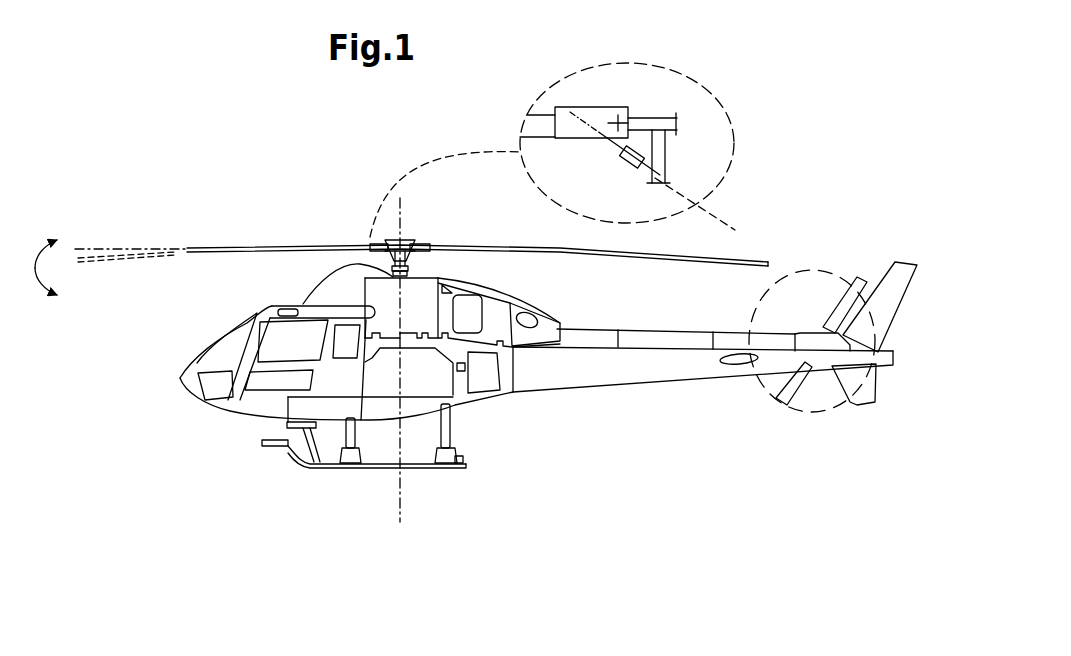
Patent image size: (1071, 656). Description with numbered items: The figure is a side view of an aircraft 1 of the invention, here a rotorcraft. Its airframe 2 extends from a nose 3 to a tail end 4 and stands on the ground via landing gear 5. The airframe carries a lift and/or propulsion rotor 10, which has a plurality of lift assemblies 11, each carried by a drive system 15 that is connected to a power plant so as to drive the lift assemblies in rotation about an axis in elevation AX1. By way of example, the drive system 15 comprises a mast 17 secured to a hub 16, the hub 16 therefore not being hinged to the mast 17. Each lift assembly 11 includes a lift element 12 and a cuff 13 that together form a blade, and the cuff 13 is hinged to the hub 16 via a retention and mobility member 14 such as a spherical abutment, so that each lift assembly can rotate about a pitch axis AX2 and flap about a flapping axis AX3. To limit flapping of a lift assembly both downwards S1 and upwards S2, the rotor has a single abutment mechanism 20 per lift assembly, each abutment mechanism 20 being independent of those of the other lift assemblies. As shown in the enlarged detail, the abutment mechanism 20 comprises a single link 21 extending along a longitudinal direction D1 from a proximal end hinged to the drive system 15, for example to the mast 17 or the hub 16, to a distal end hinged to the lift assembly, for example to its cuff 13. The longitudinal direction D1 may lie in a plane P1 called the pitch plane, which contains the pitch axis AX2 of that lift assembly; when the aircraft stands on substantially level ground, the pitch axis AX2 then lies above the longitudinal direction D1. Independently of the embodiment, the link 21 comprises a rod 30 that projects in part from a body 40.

The aircraft 1 is at (497, 247).
The airframe 2 is at (247, 417).
The nose 3 is at (178, 378).
The tail end 4 is at (900, 395).
The landing gear 5 is at (478, 433).
The rotor 10 is at (433, 177).
The lift assembly 11 is at (93, 266).
The lift element 12 is at (188, 248).
The cuff 13 is at (373, 246).
The retention and mobility member 14 is at (387, 238).
The drive system 15 is at (428, 233).
The hub 16 is at (416, 240).
The mast 17 is at (408, 276).
The abutment mechanism 20 is at (477, 222).
The link 21 is at (626, 175).
The rod 30 is at (610, 148).
The body 40 is at (645, 153).
The axis in elevation AX1 is at (402, 484).
The pitch axis AX2 is at (98, 249).
The flapping axis AX3 is at (394, 240).
The downward flapping direction S1 is at (52, 302).
The upward flapping direction S2 is at (52, 233).
The pitch plane P1 is at (55, 396).
The longitudinal direction D1 is at (733, 232).